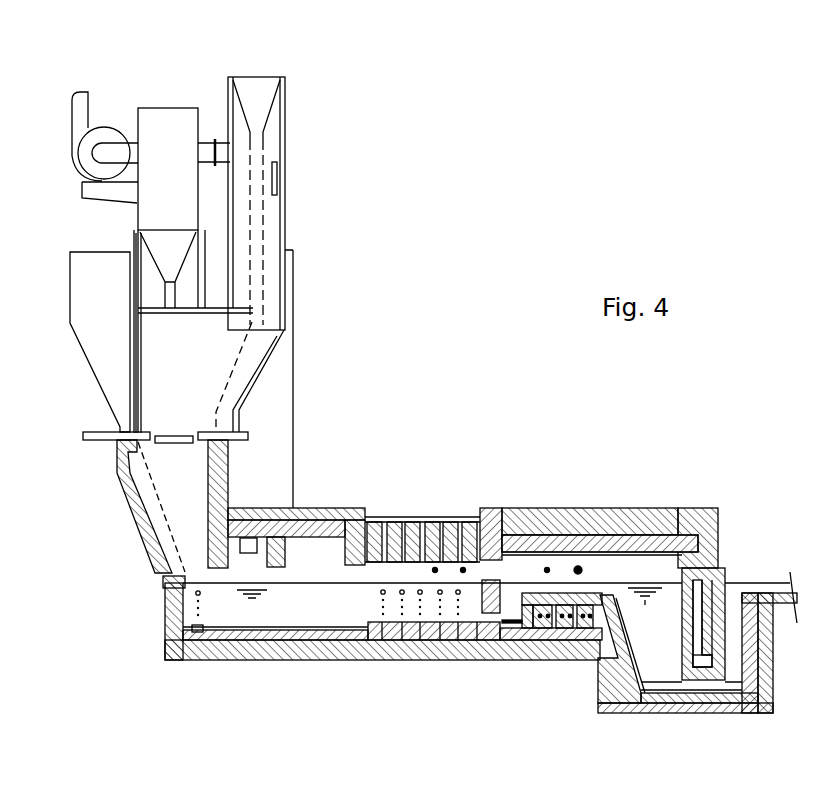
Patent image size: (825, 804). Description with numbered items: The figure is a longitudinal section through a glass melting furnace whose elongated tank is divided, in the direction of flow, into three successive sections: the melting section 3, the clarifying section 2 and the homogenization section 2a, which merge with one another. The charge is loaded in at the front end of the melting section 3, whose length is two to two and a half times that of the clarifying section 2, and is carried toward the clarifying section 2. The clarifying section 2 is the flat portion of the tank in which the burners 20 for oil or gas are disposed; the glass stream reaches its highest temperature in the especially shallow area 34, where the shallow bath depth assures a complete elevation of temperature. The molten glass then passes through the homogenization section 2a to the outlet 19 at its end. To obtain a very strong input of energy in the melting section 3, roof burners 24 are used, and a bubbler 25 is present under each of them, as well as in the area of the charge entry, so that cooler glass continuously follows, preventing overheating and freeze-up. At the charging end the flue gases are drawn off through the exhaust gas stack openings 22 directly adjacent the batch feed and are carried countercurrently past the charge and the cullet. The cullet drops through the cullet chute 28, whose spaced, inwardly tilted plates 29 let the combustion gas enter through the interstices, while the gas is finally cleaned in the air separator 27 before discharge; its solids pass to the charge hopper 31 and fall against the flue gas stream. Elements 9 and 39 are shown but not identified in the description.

The air separator 27 is at (106, 138).
The charge hopper 31 is at (175, 123).
The cullet chute 28 is at (276, 226).
The plates 29 is at (268, 248).
The exhaust gas stack openings 22 is at (250, 538).
The roof burners 24 is at (462, 567).
The shallow area 34 is at (533, 593).
The burners 20 is at (579, 567).
The trough 9 is at (333, 630).
The bubbler 25 is at (420, 655).
The stop block 39 is at (481, 600).
The clarifying section 2 is at (514, 604).
The outlet 19 is at (667, 713).
The melting section 3 is at (268, 605).
The homogenization section 2a is at (649, 614).